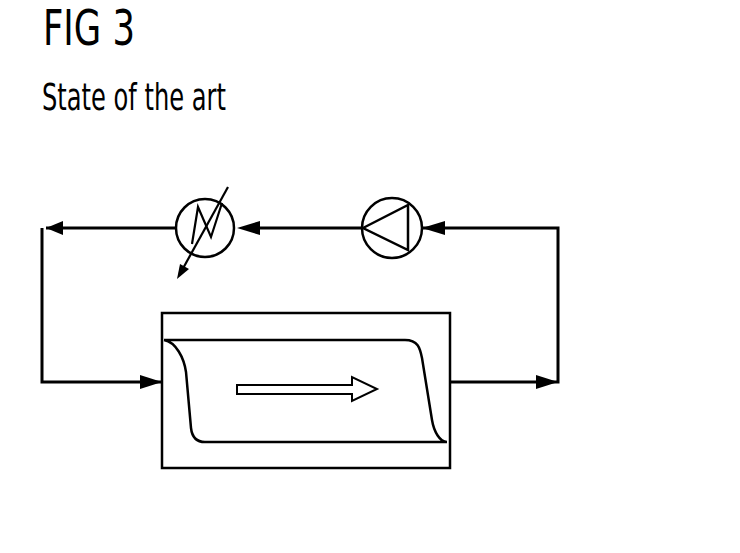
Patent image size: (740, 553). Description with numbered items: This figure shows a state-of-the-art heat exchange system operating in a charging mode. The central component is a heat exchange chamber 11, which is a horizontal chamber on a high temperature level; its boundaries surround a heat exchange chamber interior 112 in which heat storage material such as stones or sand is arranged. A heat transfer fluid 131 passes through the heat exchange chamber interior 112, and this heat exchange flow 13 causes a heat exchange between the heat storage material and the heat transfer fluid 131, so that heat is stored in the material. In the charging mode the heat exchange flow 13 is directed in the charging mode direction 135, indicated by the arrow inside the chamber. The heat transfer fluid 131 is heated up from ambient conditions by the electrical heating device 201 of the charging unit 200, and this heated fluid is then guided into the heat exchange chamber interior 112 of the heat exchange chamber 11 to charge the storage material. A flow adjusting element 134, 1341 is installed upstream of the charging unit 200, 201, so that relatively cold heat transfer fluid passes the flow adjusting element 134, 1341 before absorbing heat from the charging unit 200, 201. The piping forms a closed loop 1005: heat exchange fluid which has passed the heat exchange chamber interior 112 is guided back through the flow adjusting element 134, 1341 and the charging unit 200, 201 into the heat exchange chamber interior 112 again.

The heat exchange chamber 11 is at (300, 425).
The heat exchange chamber interior 112 is at (172, 449).
The heat exchange flow 13 is at (302, 457).
The heat transfer fluid 131 is at (302, 457).
The charging mode direction 135 is at (298, 390).
The flow adjusting element 134 is at (419, 192).
The flow adjusting element 1341 is at (398, 197).
The charging unit 200 is at (221, 201).
The electrical heating device 201 is at (203, 197).
The closed loop 1005 is at (558, 305).